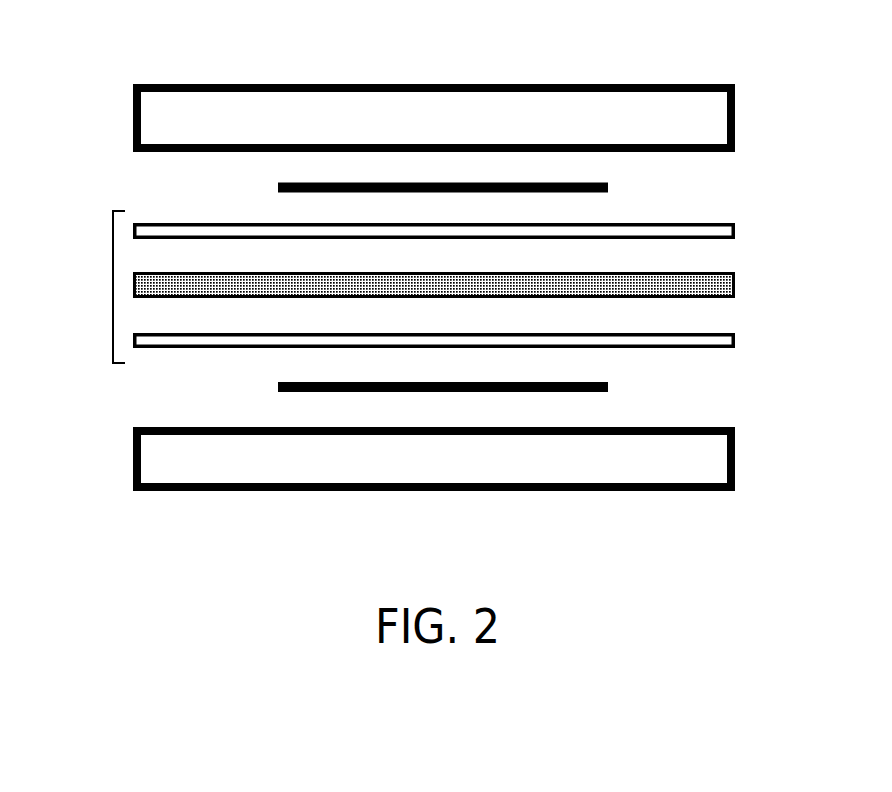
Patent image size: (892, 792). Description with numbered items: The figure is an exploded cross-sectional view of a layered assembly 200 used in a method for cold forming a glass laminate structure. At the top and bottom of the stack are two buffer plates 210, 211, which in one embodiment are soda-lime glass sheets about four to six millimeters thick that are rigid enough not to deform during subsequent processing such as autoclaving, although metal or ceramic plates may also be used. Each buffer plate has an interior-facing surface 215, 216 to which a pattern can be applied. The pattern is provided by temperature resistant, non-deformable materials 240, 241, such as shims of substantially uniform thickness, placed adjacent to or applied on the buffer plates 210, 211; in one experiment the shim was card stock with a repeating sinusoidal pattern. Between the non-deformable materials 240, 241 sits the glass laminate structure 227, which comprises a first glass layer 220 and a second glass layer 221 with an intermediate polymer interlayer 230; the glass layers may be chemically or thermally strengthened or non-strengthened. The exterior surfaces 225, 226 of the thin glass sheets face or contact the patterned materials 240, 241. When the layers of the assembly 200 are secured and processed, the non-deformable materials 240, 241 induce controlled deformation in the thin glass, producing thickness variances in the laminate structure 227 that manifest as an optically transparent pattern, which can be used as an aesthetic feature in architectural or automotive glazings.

The layered assembly 200 is at (137, 36).
The buffer plate 210 is at (742, 118).
The buffer plate 211 is at (742, 458).
The interior-facing surface 215 is at (190, 130).
The interior-facing surface 216 is at (216, 444).
The first glass layer 220 is at (742, 228).
The second glass layer 221 is at (742, 340).
The exterior surface 225 is at (210, 212).
The exterior surface 226 is at (193, 371).
The glass laminate structure 227 is at (113, 287).
The polymer interlayer 230 is at (742, 283).
The non-deformable material 240 is at (628, 186).
The non-deformable material 241 is at (628, 387).